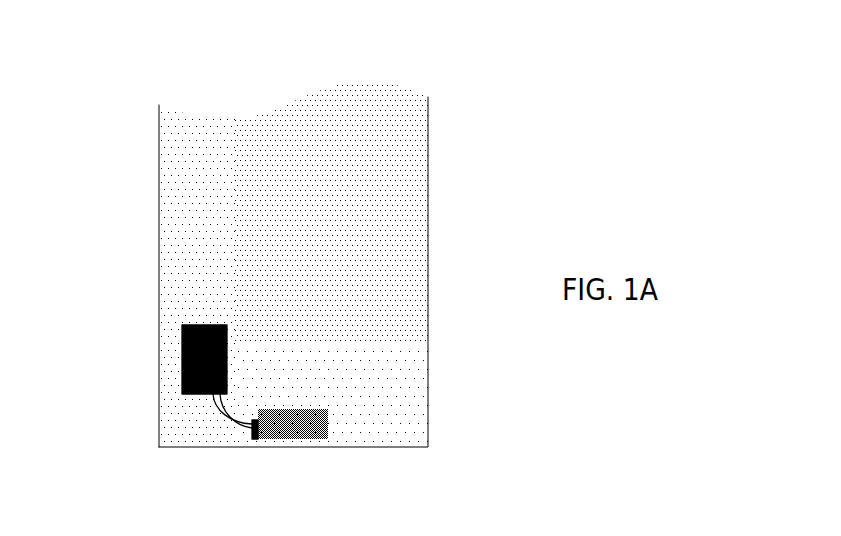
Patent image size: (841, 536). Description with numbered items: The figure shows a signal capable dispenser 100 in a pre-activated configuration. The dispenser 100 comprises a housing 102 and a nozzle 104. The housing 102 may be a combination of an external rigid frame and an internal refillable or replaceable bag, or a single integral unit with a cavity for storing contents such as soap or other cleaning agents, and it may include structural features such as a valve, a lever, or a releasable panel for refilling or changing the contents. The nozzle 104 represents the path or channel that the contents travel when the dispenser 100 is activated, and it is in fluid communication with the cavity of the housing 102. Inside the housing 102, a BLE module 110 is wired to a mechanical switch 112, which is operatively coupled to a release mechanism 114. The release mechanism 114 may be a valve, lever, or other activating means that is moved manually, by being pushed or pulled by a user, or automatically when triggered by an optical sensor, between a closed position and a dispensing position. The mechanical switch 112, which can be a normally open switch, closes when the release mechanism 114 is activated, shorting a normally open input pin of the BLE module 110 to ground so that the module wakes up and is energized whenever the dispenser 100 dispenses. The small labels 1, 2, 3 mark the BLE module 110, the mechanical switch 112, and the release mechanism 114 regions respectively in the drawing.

The dispenser 100 is at (490, 178).
The housing 102 is at (153, 205).
The nozzle 104 is at (323, 380).
The BLE module 110 is at (180, 373).
The mechanical switch 112 is at (250, 431).
The release mechanism 114 is at (330, 428).
The first region 1 is at (182, 372).
The second region 2 is at (252, 437).
The third region 3 is at (328, 434).